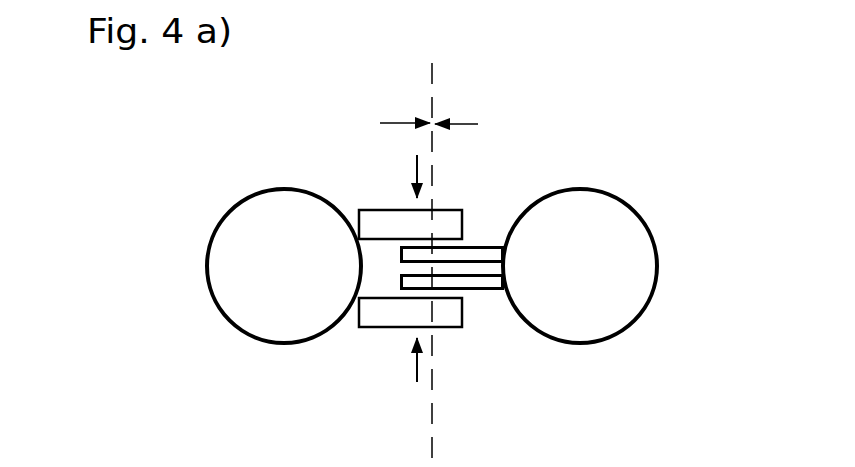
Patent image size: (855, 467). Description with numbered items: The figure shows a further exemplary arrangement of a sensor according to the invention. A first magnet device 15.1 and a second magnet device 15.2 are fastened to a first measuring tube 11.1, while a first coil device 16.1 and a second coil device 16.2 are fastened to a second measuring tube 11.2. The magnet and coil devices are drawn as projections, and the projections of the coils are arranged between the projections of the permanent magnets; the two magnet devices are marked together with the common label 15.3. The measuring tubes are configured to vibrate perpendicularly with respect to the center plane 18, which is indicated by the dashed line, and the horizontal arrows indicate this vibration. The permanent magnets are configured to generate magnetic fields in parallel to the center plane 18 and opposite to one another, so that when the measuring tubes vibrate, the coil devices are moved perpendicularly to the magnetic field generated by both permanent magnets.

The first measuring tube 11.1 is at (190, 297).
The second measuring tube 11.2 is at (665, 297).
The first magnet device 15.1 is at (373, 197).
The second magnet device 15.2 is at (375, 335).
The contact elements 15.3 is at (338, 271).
The first coil device 16.1 is at (490, 238).
The second coil device 16.2 is at (478, 292).
The center plane 18 is at (442, 93).